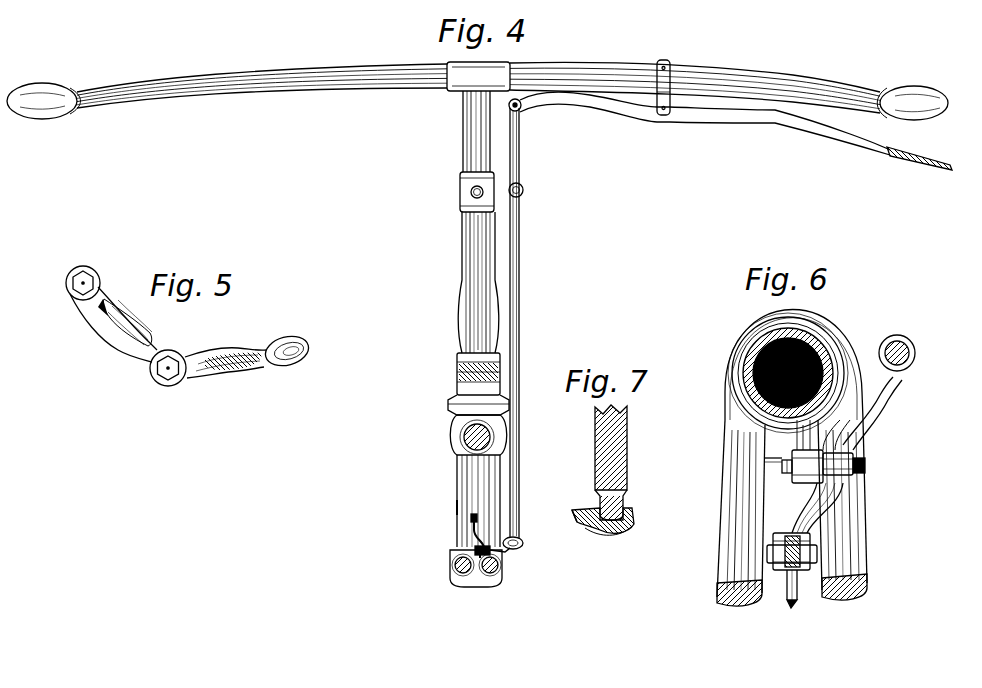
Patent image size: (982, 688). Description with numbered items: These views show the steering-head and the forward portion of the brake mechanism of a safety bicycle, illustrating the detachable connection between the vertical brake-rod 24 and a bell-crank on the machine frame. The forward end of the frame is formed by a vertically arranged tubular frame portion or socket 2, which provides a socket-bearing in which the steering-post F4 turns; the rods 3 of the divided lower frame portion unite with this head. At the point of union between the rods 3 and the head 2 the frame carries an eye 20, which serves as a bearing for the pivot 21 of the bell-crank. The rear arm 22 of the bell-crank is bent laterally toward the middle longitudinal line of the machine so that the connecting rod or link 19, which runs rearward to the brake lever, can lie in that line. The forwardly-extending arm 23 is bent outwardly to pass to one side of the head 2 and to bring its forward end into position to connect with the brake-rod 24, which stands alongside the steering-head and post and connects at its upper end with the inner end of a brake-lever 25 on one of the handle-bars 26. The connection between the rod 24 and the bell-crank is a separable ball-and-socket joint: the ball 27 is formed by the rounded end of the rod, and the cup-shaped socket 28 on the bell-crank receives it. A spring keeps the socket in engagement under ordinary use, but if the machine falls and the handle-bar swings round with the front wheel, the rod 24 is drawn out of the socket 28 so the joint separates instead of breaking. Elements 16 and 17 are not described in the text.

In FIG. 4, the tubular frame portion or socket 2 is at (458, 472).
In FIG. 6, the tubular frame portion or socket 2 is at (747, 347).
In FIG. 4, the rods 3 is at (458, 567).
In FIG. 6, the rods 3 is at (790, 513).
In FIG. 6, the brake rod 16 is at (800, 580).
In FIG. 4, the slot in stem 17 is at (457, 507).
In FIG. 6, the rod or link 19 is at (790, 607).
In FIG. 4, the eye 20 is at (480, 557).
In FIG. 6, the eye 20 is at (800, 483).
In FIG. 4, the pivot 21 is at (475, 551).
In FIG. 5, the pivot 21 is at (164, 371).
In FIG. 6, the pivot 21 is at (839, 467).
In FIG. 4, the rear arm 22 is at (480, 532).
In FIG. 5, the rear arm 22 is at (111, 314).
In FIG. 6, the rear arm 22 is at (828, 513).
In FIG. 4, the forwardly-extending arm 23 is at (507, 555).
In FIG. 5, the forwardly-extending arm 23 is at (235, 356).
In FIG. 6, the forwardly-extending arm 23 is at (893, 397).
In FIG. 7, the forwardly-extending arm 23 is at (561, 522).
In FIG. 4, the brake-rod 24 is at (518, 536).
In FIG. 6, the brake-rod 24 is at (887, 343).
In FIG. 7, the brake-rod 24 is at (627, 447).
In FIG. 4, the brake-lever 25 is at (736, 131).
In FIG. 4, the handle-bars 26 is at (686, 76).
In FIG. 7, the ball 27 is at (624, 504).
In FIG. 4, the socket 28 is at (523, 541).
In FIG. 5, the socket 28 is at (287, 342).
In FIG. 7, the socket 28 is at (622, 528).
In FIG. 4, the steering-post F4 is at (418, 146).